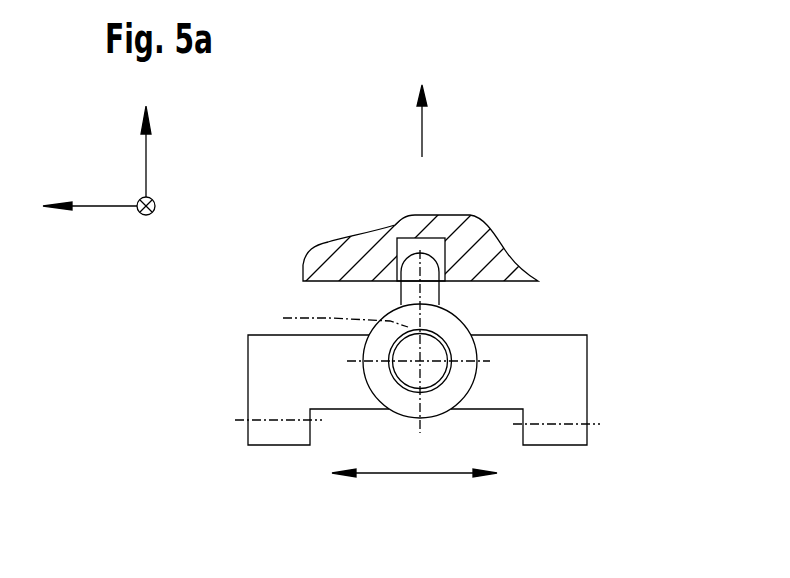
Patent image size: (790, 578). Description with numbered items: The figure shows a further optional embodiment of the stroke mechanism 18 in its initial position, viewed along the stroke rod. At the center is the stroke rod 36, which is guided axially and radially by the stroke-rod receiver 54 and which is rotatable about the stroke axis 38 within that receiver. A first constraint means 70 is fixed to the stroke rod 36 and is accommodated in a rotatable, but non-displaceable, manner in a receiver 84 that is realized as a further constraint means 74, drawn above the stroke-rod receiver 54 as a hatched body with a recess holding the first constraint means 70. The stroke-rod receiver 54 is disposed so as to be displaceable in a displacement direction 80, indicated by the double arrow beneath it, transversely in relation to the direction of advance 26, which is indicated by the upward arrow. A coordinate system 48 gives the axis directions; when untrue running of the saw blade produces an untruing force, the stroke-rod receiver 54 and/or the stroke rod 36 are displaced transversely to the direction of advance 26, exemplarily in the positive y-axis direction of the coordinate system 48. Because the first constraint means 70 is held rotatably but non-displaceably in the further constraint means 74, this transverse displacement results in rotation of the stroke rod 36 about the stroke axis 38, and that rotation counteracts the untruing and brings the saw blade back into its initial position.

The stroke mechanism 18 is at (634, 174).
The direction of advance 26 is at (424, 127).
The stroke rod 36 is at (410, 334).
The stroke axis 38 is at (283, 318).
The coordinate system 48 is at (155, 201).
The stroke-rod receiver 54 is at (553, 370).
The first constraint means 70 is at (446, 281).
The further constraint means 74 is at (443, 228).
The displacement direction 80 is at (415, 474).
The receiver 84 is at (397, 232).